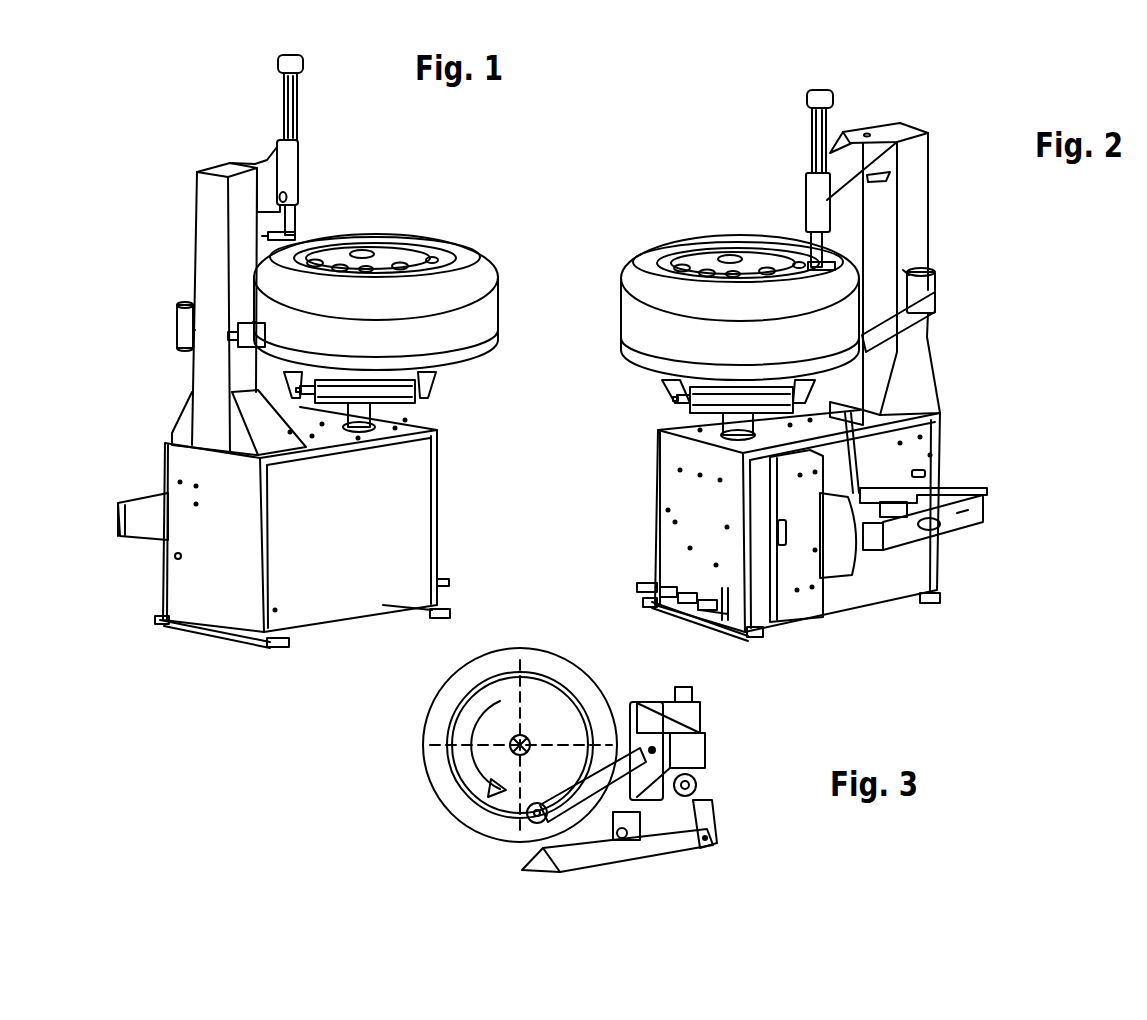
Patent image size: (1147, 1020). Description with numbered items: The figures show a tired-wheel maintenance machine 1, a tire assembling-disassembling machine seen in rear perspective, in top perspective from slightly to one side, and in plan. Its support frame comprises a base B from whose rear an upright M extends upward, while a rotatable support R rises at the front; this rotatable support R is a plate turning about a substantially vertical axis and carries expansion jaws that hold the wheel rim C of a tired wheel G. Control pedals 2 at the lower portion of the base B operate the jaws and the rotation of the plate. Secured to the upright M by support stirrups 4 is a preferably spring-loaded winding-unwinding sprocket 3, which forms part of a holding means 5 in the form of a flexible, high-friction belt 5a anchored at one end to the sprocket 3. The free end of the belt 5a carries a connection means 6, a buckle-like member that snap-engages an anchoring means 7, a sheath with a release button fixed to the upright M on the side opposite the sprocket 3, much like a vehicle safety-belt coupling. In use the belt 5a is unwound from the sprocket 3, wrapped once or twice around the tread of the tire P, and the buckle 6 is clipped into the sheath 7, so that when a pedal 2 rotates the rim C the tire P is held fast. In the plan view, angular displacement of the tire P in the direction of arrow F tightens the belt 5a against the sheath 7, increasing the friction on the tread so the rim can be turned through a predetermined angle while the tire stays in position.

In FIG. 1, the tired-wheel maintenance machine 1 is at (136, 121).
In FIG. 2, the tired-wheel maintenance machine 1 is at (989, 640).
In FIG. 1, the control pedals 2 is at (448, 582).
In FIG. 2, the control pedals 2 is at (645, 585).
In FIG. 1, the winding-unwinding reel or sprocket 3 is at (188, 330).
In FIG. 2, the winding-unwinding reel or sprocket 3 is at (940, 297).
In FIG. 3, the winding-unwinding reel or sprocket 3 is at (700, 787).
In FIG. 2, the support stirrups 4 is at (930, 270).
In FIG. 3, the support stirrups 4 is at (700, 772).
In FIG. 1, the holding means 5 is at (489, 331).
In FIG. 2, the holding means 5 is at (621, 345).
In FIG. 1, the flexible belt 5a is at (491, 330).
In FIG. 2, the flexible belt 5a is at (560, 355).
In FIG. 1, the connection means 6 is at (247, 323).
In FIG. 3, the connection means 6 is at (697, 720).
In FIG. 1, the anchoring means 7 is at (175, 345).
In FIG. 1, the upright M is at (200, 378).
In FIG. 2, the upright M is at (913, 207).
In FIG. 1, the base B is at (205, 523).
In FIG. 2, the base B is at (923, 457).
In FIG. 1, the rotatable support R is at (397, 395).
In FIG. 2, the rotatable support R is at (677, 400).
In FIG. 1, the tire P is at (297, 287).
In FIG. 2, the tire P is at (750, 300).
In FIG. 3, the tire P is at (447, 800).
In FIG. 1, the wheel rim C is at (347, 242).
In FIG. 2, the wheel rim C is at (713, 262).
In FIG. 1, the tired wheel G is at (398, 226).
In FIG. 2, the tired wheel G is at (721, 225).
In FIG. 3, the tired wheel G is at (415, 775).
In FIG. 3, the arrow F is at (470, 737).